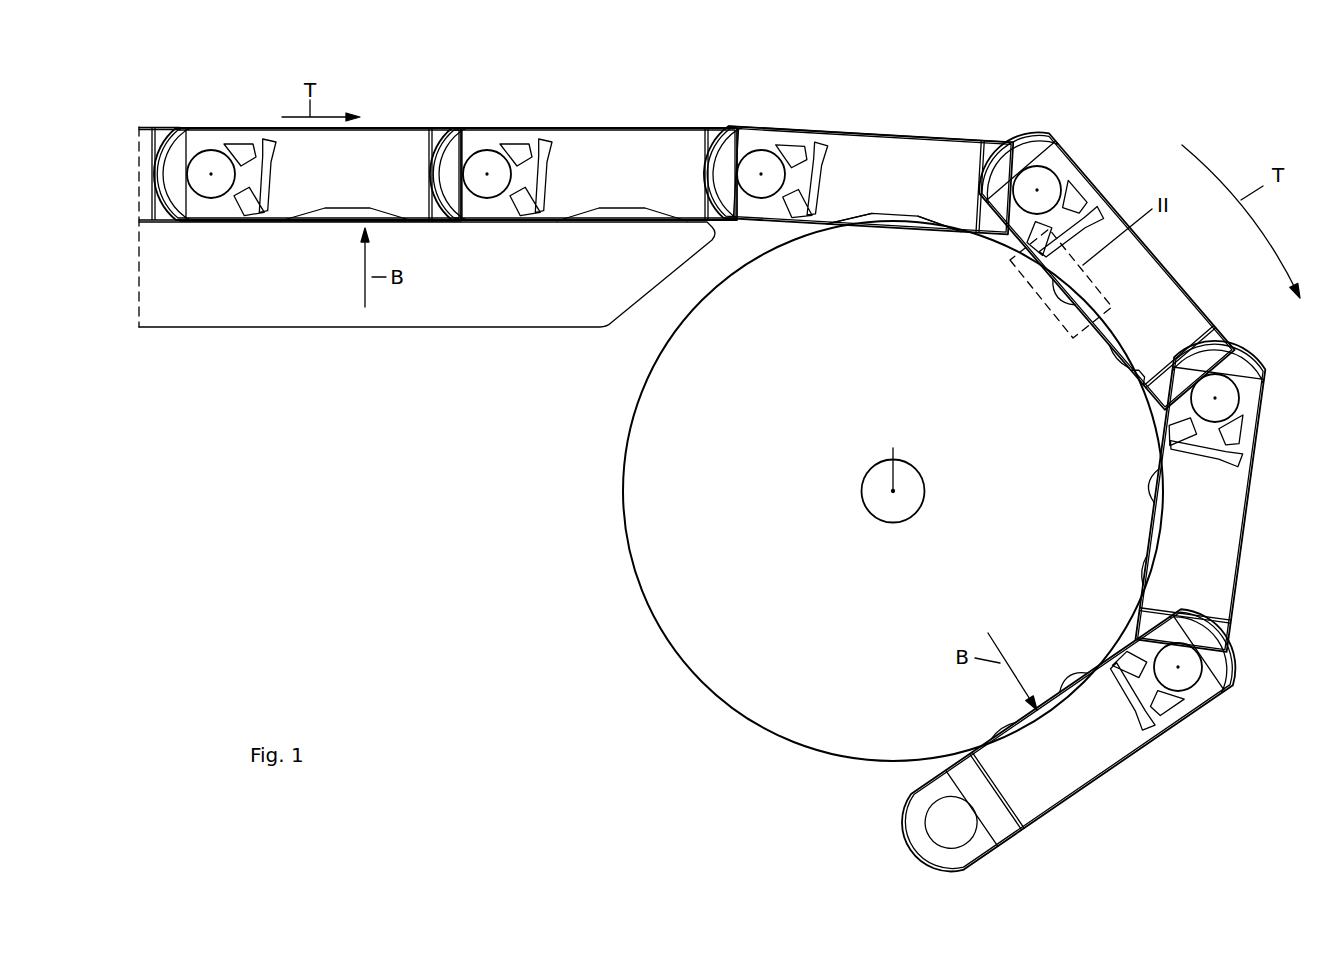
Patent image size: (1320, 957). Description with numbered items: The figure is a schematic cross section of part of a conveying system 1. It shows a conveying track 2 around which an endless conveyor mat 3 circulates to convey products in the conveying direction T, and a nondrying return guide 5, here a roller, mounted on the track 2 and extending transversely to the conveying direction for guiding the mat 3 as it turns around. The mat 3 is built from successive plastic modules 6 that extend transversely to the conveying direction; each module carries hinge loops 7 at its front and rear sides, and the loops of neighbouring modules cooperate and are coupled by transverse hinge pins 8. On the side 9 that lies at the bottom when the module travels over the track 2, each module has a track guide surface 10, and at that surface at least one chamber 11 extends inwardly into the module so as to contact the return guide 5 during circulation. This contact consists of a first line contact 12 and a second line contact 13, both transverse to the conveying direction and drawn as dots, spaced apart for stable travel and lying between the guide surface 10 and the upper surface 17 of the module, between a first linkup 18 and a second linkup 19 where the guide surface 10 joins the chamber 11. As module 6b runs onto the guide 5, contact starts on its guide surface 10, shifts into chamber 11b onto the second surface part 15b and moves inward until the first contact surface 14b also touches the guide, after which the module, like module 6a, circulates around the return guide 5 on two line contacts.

The conveying system 1 is at (264, 436).
The conveying track 2 is at (177, 302).
The endless conveyor mat 3 is at (722, 482).
The return guide 5 is at (754, 379).
The plastic module 6 is at (150, 140).
The plastic module 6a is at (1140, 268).
The plastic module 6b is at (972, 158).
The hinge loop 7 is at (211, 150).
The hinge pin 8 is at (713, 421).
The side of the module 9 is at (267, 222).
The track guide surface 10 is at (230, 222).
The chamber 11 is at (347, 212).
The chamber 11b is at (897, 220).
The first line contact 12 is at (1057, 302).
The second line contact 13 is at (1122, 357).
The first contact surface 14b is at (853, 220).
The second surface part 15b is at (933, 218).
The upper surface 17 is at (890, 132).
The first linkup 18 is at (1040, 265).
The second linkup 19 is at (1133, 373).